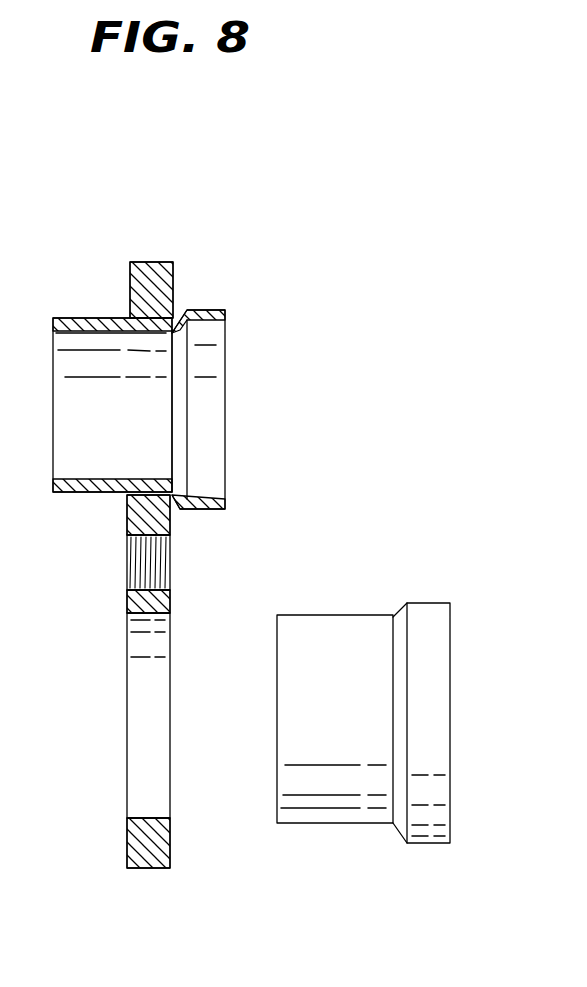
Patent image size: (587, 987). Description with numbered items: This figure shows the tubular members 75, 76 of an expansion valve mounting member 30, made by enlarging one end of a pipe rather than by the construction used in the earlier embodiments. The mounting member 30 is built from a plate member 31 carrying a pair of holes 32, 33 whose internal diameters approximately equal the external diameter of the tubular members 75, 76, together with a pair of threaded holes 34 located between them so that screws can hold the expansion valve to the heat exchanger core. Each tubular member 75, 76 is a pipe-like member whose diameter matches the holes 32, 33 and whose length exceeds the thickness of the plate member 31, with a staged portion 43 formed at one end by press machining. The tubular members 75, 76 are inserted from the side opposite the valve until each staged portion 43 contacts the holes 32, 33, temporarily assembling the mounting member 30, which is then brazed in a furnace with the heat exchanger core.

The expansion valve mounting member 30 is at (180, 265).
The plate member 31 is at (152, 868).
The hole 32 is at (168, 714).
The hole 33 is at (165, 328).
The threaded hole 34 is at (168, 560).
The staged portion 43 is at (183, 310).
The tubular member 75 is at (327, 615).
The tubular member 76 is at (85, 318).